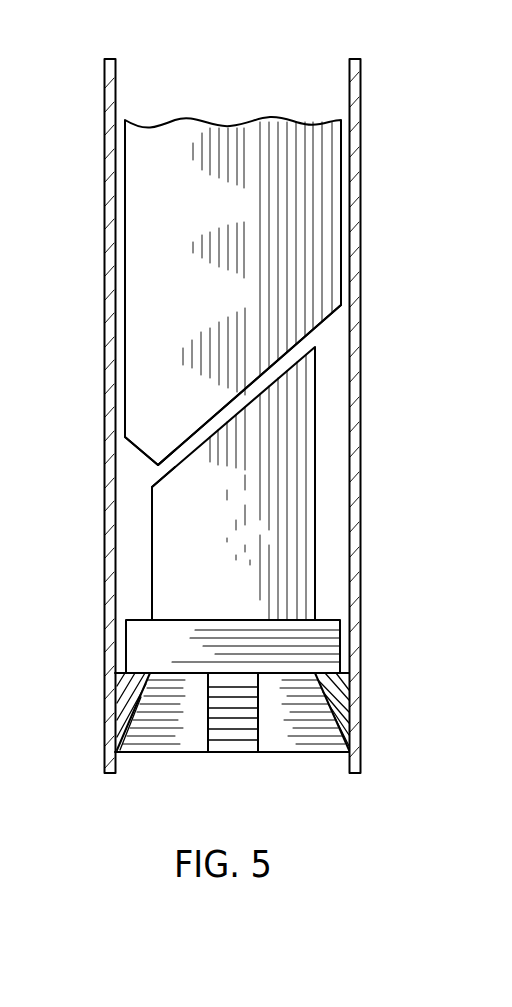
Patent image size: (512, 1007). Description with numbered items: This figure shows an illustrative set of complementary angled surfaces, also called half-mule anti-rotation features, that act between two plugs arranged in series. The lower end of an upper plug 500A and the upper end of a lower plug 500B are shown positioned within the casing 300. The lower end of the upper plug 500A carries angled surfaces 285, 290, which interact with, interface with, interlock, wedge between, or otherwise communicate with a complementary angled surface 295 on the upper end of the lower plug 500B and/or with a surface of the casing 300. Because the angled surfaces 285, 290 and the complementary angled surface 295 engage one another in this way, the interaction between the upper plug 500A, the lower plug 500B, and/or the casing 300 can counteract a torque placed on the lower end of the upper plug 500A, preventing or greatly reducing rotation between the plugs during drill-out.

The casing 300 is at (361, 155).
The angled surface 285 is at (318, 325).
The angled surface 290 is at (139, 451).
The complementary angled surface 295 is at (153, 486).
The upper plug 500A is at (197, 308).
The lower plug 500B is at (222, 592).